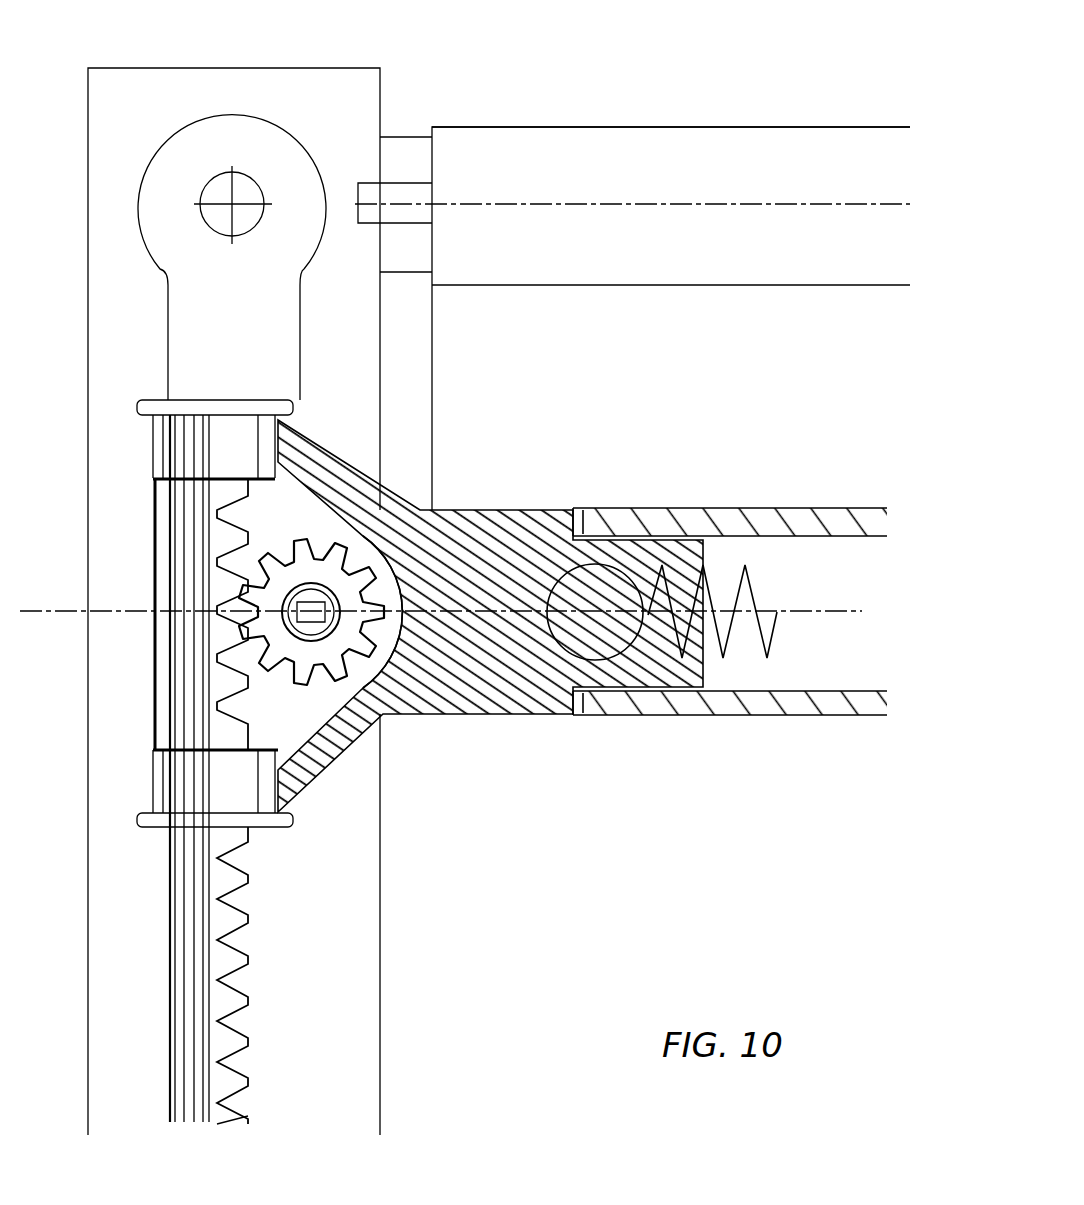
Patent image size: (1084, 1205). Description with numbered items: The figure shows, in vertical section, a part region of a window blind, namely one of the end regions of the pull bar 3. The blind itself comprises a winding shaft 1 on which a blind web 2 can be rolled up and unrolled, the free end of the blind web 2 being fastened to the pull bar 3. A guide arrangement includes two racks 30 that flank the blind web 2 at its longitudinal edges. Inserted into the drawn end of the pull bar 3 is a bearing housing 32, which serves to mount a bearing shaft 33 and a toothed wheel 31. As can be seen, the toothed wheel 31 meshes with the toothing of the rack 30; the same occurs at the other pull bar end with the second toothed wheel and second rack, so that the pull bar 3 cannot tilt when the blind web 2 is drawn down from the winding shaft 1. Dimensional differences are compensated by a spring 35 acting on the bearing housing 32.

The winding shaft 1 is at (788, 127).
The blind web 2 is at (657, 323).
The pull bar 3 is at (808, 703).
The rack 30 is at (172, 1013).
The toothed wheel 31 is at (315, 525).
The bearing housing 32 is at (460, 543).
The bearing shaft 33 is at (360, 555).
The spring 35 is at (710, 590).